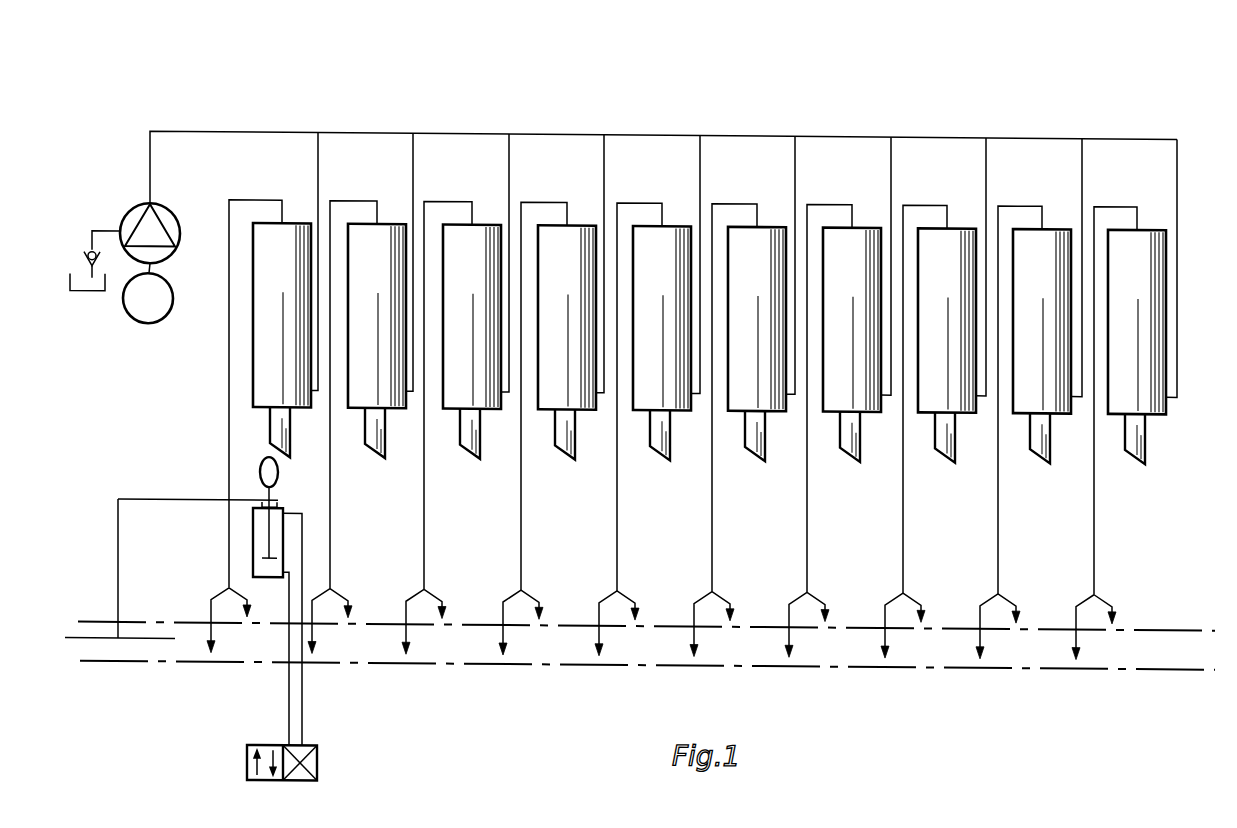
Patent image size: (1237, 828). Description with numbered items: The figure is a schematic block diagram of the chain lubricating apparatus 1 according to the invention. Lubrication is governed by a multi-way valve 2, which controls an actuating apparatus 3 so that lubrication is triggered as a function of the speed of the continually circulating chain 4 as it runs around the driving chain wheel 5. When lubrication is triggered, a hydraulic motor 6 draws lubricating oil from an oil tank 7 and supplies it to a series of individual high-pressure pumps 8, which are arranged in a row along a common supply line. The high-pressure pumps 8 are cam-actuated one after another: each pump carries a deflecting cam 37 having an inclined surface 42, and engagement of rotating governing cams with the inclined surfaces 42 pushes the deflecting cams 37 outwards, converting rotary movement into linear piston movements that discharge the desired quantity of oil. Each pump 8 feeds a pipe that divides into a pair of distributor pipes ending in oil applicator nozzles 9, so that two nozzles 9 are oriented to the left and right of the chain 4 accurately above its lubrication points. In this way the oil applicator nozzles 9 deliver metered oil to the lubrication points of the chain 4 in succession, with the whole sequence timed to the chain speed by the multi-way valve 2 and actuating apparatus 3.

The chain lubricating apparatus 1 is at (1031, 57).
The multi-way valve 2 is at (317, 760).
The actuating apparatus 3 is at (255, 545).
The chain 4 is at (975, 666).
The driving chain wheel 5 is at (165, 642).
The hydraulic motor 6 is at (133, 218).
The oil tank 7 is at (95, 292).
The high-pressure pumps 8 is at (290, 242).
The oil applicator nozzles 9 is at (538, 622).
The deflecting cams 37 is at (370, 437).
The inclined surfaces 42 is at (465, 452).